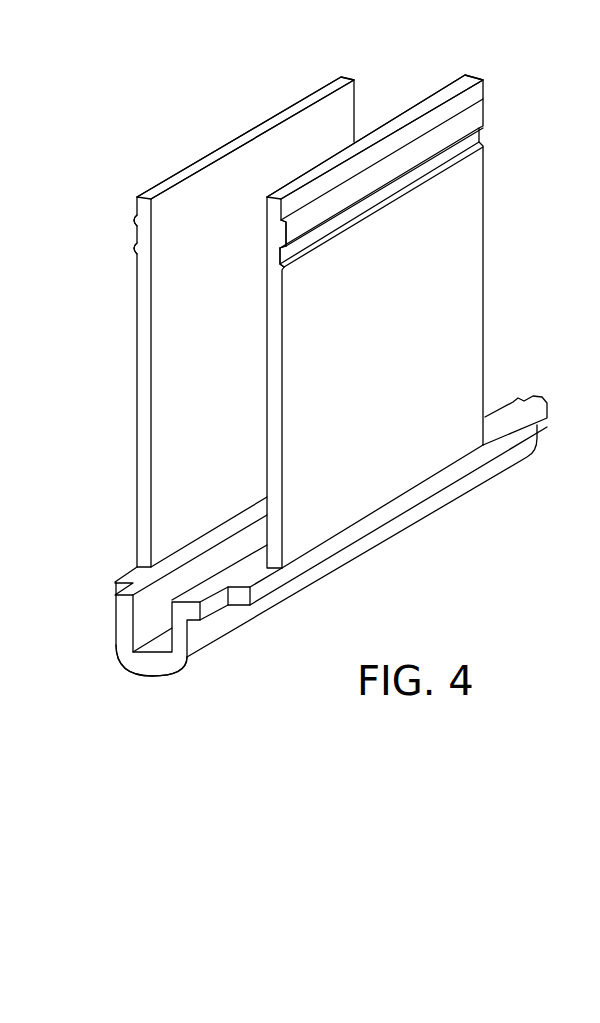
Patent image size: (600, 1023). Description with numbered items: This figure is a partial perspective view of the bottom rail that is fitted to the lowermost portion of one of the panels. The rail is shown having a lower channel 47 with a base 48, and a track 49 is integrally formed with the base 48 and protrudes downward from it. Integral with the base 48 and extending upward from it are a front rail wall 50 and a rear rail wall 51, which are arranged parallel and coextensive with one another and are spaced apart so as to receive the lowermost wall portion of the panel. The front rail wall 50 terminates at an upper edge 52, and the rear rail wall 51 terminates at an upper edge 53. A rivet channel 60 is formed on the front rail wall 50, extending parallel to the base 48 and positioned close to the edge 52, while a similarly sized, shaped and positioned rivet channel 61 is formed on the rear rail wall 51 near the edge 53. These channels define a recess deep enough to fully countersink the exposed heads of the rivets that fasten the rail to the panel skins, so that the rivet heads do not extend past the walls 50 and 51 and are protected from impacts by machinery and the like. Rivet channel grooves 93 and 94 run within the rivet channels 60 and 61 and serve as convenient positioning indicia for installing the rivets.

The lower channel 47 is at (291, 568).
The base 48 is at (200, 636).
The track 49 is at (152, 677).
The front rail wall 50 is at (143, 412).
The rear rail wall 51 is at (462, 300).
The edge 52 is at (163, 183).
The edge 53 is at (432, 93).
The rivet channel 60 is at (135, 219).
The rivet channel 61 is at (283, 225).
The rivet channel groove 93 is at (135, 258).
The rivet channel groove 94 is at (290, 236).